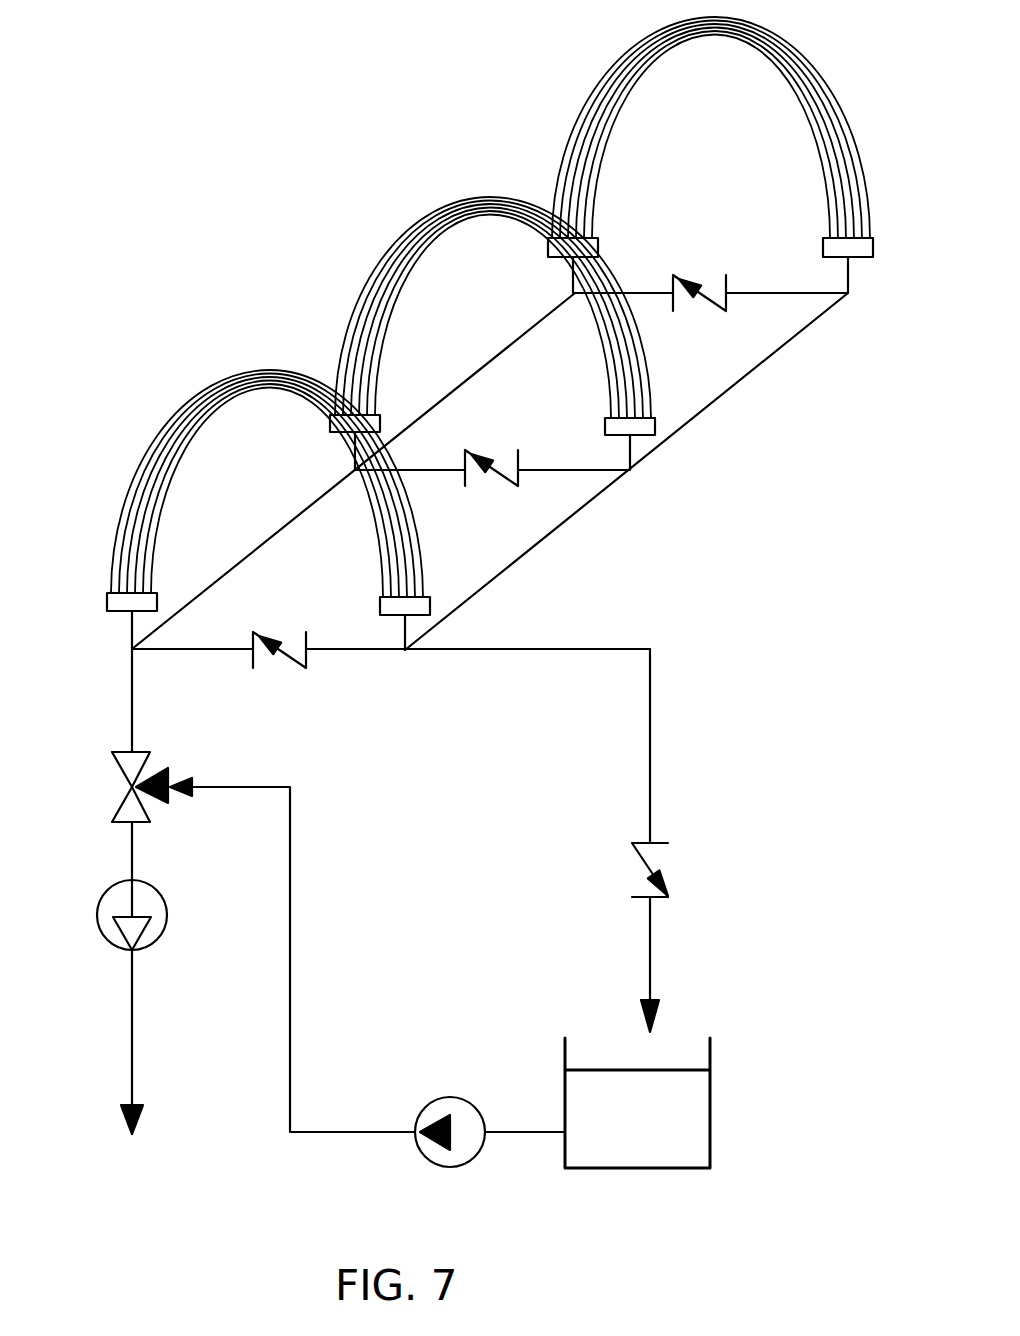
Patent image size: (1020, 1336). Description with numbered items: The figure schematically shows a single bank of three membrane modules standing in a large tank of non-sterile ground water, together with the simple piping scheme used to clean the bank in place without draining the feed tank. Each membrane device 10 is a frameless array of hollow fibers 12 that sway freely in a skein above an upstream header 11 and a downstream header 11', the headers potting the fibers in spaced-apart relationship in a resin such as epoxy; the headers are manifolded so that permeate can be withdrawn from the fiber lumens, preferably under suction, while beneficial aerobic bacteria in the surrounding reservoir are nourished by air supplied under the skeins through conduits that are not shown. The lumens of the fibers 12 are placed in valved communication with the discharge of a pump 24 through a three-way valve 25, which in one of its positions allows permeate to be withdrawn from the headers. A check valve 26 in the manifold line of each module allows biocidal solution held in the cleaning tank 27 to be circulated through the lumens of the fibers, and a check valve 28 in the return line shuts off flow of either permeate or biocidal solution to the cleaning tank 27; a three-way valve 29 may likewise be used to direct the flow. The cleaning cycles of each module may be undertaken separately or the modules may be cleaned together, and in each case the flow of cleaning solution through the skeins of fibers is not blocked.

The membrane device 10 is at (829, 91).
The fibers 12 is at (157, 475).
The upstream header 11 is at (84, 597).
The downstream header 11' is at (446, 609).
The check valve 26 is at (306, 668).
The 3-way valve 25 is at (150, 801).
The 3-way valve 29 is at (167, 917).
The check valve 28 is at (668, 882).
The pump 24 is at (433, 1098).
The cleaning tank 27 is at (712, 1088).